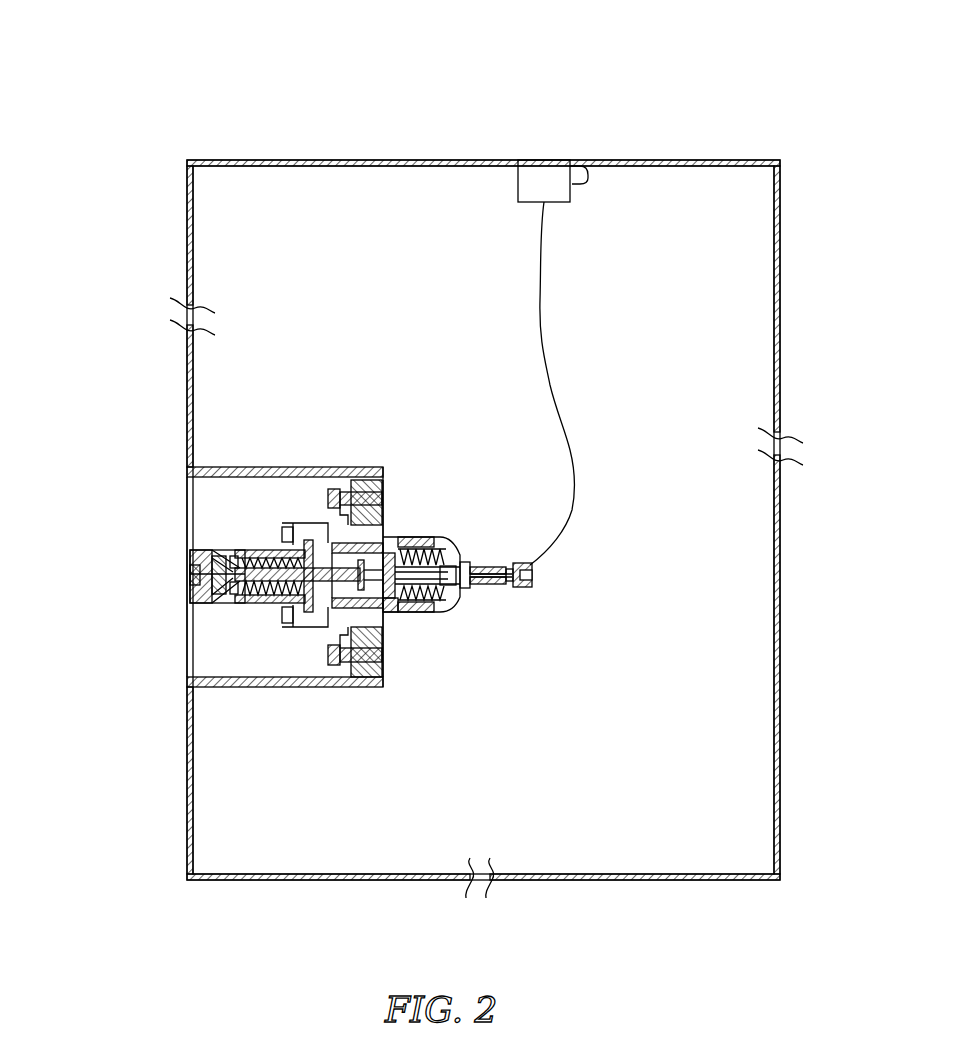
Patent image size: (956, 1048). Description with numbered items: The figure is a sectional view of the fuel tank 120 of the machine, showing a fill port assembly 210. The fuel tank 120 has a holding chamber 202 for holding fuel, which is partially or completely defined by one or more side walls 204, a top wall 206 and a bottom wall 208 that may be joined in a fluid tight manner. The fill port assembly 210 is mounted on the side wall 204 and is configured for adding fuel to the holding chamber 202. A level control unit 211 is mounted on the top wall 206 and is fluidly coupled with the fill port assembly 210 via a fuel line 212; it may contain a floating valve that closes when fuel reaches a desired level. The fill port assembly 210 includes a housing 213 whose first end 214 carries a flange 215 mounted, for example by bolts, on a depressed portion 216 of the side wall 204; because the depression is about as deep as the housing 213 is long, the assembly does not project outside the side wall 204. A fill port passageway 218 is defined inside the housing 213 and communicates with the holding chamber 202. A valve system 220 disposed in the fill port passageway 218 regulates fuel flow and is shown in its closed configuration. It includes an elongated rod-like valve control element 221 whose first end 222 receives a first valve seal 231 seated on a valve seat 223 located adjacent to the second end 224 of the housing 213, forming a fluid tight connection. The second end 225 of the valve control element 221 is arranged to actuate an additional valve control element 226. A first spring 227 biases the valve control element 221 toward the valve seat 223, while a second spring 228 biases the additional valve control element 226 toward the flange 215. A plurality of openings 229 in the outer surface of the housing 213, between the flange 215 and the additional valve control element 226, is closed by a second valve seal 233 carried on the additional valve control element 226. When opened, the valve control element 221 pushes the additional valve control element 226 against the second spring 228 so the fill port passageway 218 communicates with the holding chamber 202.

The fuel tank 120 is at (518, 60).
The holding chamber 202 is at (690, 294).
The side wall 204 is at (190, 300).
The top wall 206 is at (690, 160).
The bottom wall 208 is at (672, 880).
The fill port assembly 210 is at (148, 450).
The level control unit 211 is at (572, 183).
The fuel line 212 is at (568, 424).
The housing 213 is at (283, 545).
The first end 214 is at (362, 687).
The flange 215 is at (385, 480).
The depressed portion 216 is at (385, 512).
The fill port passageway 218 is at (386, 540).
The valve system 220 is at (190, 590).
The valve control element 221 is at (262, 553).
The first end 222 is at (240, 604).
The valve seat 223 is at (196, 605).
The second end 224 is at (192, 550).
The second end 225 is at (405, 610).
The additional valve control element 226 is at (390, 545).
The first spring 227 is at (252, 550).
The second spring 228 is at (460, 602).
The plurality of openings 229 is at (442, 548).
The first valve seal 231 is at (190, 570).
The second valve seal 233 is at (394, 605).